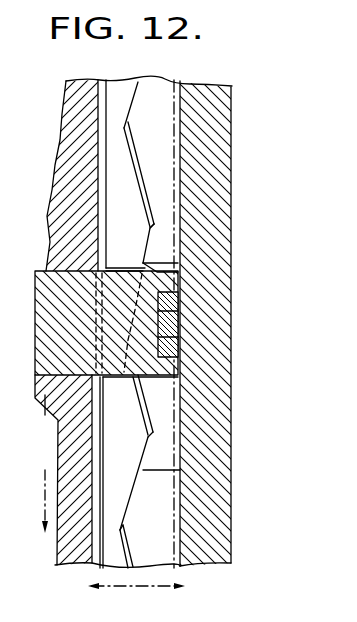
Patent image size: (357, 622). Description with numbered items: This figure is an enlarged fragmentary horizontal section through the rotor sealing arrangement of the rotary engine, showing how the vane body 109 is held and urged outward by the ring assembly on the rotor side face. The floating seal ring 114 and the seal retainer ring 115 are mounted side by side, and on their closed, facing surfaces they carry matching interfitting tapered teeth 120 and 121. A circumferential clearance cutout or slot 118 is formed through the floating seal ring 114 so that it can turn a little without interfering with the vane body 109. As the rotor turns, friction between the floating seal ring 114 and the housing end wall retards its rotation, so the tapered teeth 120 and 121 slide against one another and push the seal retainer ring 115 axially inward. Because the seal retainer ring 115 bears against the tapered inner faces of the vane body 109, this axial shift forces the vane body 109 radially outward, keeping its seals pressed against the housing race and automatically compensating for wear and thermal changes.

The vane body 109 is at (155, 270).
The floating seal ring 114 is at (152, 147).
The tapered teeth 120 is at (145, 122).
The seal retainer ring 115 is at (112, 448).
The tapered teeth 121 is at (137, 430).
The circumferential clearance cutout 118 is at (155, 453).